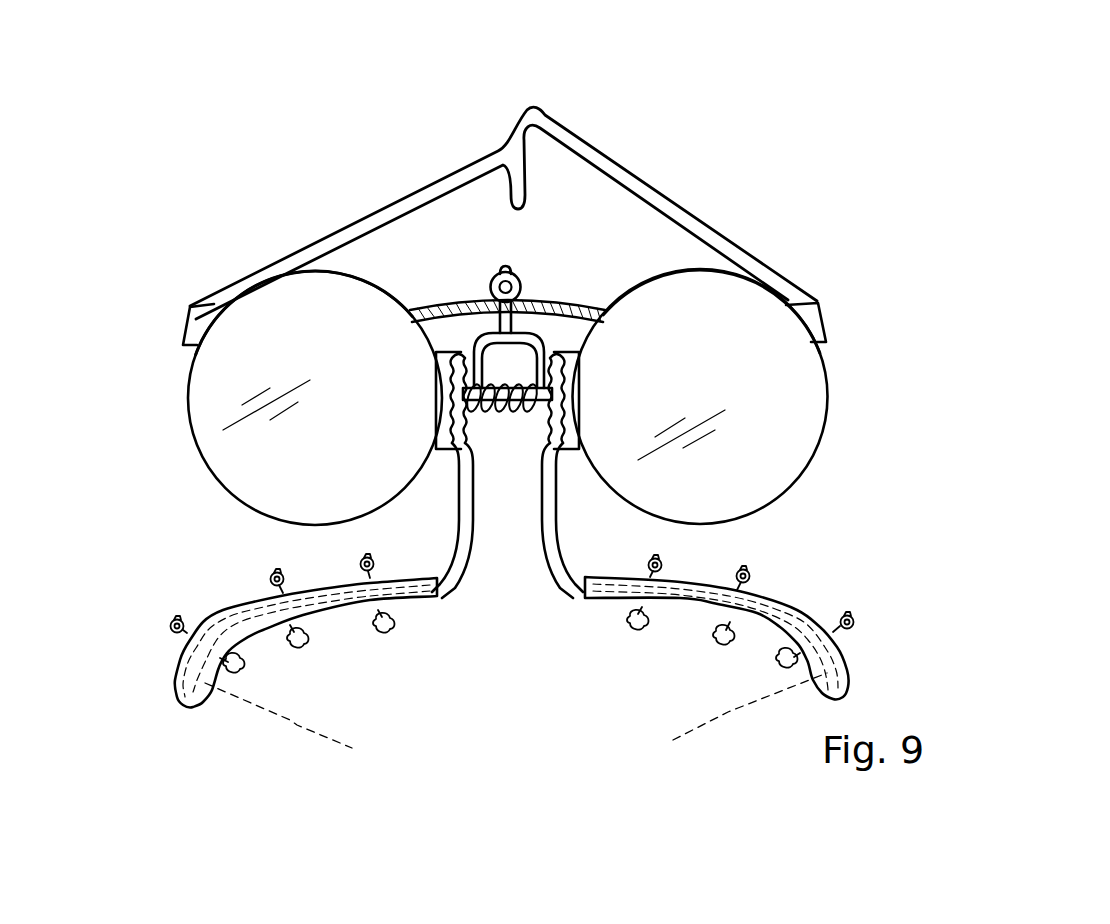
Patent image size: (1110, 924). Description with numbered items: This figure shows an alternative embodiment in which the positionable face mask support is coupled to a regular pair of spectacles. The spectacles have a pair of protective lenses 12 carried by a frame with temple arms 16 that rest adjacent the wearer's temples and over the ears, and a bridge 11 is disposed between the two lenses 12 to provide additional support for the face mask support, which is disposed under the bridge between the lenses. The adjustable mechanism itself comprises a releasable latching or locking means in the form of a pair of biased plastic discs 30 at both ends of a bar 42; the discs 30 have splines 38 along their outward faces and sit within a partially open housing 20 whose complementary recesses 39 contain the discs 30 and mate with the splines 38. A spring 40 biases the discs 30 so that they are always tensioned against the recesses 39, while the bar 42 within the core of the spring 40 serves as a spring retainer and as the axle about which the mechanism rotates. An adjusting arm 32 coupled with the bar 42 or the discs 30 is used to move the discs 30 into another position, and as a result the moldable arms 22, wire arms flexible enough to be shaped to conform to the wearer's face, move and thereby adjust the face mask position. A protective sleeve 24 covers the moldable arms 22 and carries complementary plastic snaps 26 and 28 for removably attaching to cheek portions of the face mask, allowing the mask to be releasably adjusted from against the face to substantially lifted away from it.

The bridge 11 is at (514, 300).
The protective lenses 12 is at (358, 475).
The temple arms 16 is at (392, 213).
The housing 20 is at (435, 353).
The moldable members 22 is at (555, 583).
The protective sleeve 24 is at (270, 597).
The plastic snaps 26 is at (303, 643).
The plastic snaps 28 is at (178, 632).
The biased plastic discs 30 is at (413, 312).
The adjusting arm 32 is at (493, 268).
The splines 38 is at (452, 433).
The recesses 39 is at (452, 372).
The spring 40 is at (480, 388).
The bar 42 is at (474, 390).